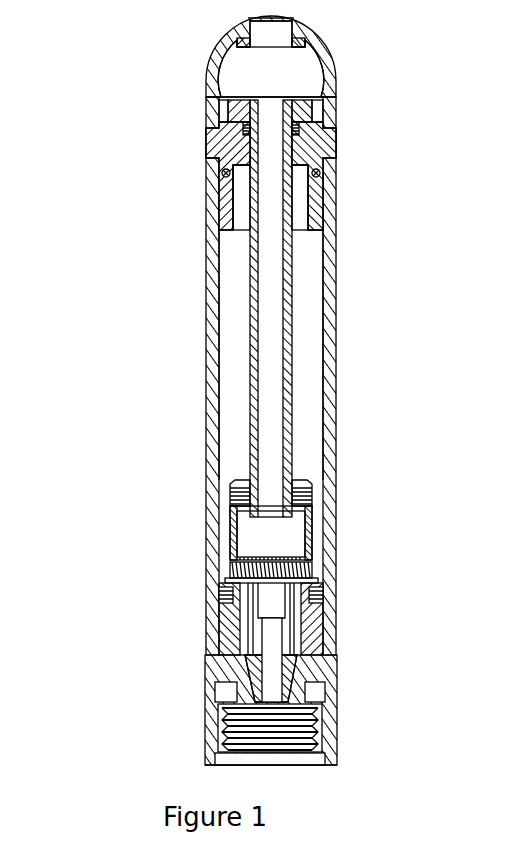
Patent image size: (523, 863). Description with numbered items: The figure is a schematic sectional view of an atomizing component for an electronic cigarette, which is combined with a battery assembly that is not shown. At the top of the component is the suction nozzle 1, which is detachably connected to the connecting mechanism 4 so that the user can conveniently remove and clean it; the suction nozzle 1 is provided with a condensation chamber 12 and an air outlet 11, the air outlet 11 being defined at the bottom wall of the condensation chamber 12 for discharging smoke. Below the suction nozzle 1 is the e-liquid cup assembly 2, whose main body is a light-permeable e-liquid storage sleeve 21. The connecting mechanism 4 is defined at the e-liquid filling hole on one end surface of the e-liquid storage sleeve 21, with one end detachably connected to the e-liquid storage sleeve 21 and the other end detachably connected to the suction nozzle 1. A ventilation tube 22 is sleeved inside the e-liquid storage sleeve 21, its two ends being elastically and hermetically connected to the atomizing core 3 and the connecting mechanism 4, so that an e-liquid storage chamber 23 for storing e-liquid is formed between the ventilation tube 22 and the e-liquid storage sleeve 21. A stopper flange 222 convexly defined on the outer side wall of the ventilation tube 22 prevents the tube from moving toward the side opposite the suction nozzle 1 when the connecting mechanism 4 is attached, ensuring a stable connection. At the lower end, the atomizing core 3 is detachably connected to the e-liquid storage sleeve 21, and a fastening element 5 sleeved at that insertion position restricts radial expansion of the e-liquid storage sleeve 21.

The suction nozzle 1 is at (93, 27).
The air outlet 11 is at (262, 33).
The condensation chamber 12 is at (240, 78).
The e-liquid cup assembly 2 is at (68, 282).
The e-liquid storage sleeve 21 is at (216, 275).
The ventilation tube 22 is at (253, 346).
The e-liquid storage chamber 23 is at (233, 402).
The connecting mechanism 4 is at (330, 145).
The stopper flange 222 is at (300, 479).
The fastening element 5 is at (336, 630).
The atomizing core 3 is at (215, 672).